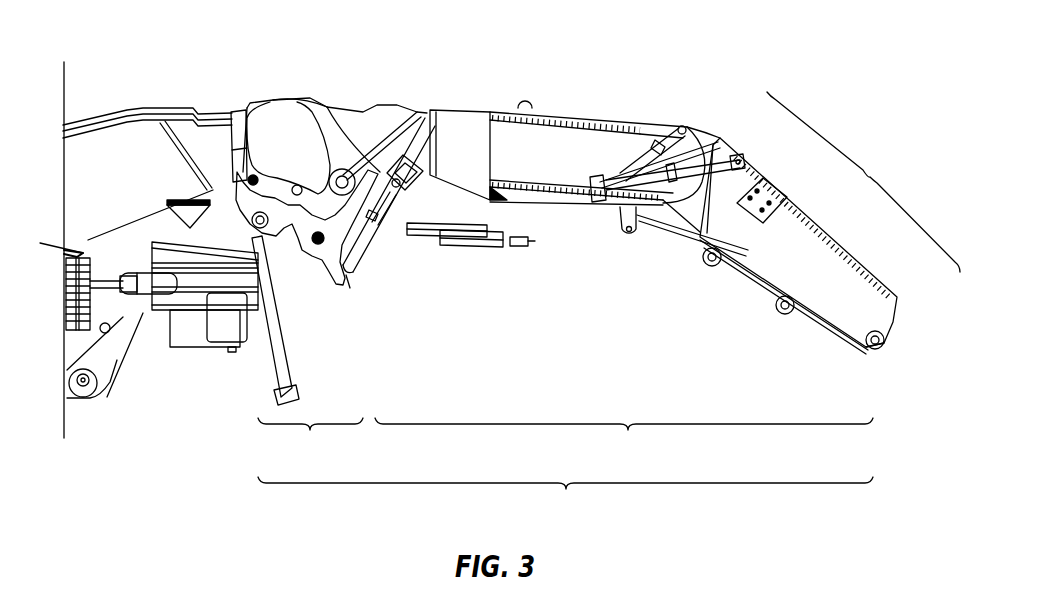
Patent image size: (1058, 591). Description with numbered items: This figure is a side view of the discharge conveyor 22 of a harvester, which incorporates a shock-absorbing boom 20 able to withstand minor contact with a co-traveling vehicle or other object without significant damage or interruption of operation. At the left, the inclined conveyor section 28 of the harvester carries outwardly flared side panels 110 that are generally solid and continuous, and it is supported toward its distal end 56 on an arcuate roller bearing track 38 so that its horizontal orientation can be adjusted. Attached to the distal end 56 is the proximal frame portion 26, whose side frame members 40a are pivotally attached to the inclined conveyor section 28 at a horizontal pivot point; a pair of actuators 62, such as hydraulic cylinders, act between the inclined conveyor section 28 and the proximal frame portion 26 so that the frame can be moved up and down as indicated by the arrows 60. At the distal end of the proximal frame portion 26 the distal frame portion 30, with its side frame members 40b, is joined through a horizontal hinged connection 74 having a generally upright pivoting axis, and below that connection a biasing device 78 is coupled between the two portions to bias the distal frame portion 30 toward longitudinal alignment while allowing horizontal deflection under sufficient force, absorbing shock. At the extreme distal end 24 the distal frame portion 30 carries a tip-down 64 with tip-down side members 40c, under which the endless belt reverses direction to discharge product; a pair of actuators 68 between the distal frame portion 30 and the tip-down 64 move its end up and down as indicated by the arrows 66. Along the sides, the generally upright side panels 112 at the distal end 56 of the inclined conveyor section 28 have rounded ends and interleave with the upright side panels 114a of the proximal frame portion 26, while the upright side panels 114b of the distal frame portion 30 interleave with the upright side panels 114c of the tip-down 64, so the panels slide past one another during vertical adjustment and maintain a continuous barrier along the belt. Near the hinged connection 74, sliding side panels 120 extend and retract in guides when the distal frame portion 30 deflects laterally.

The shock-absorbing boom 20 is at (565, 498).
The discharge conveyor 22 is at (536, 68).
The distal end 24 is at (891, 391).
The proximal frame portion 26 is at (310, 442).
The inclined conveyor section 28 is at (123, 130).
The distal frame portion 30 is at (624, 442).
The arcuate roller bearing track 38 is at (293, 387).
The side frame members of the proximal frame portion 40a is at (427, 120).
The side frame members of the distal frame portion 40b is at (597, 203).
The tip-down side members 40c is at (743, 290).
The distal end of the inclined conveyor section 56 is at (286, 66).
The arrows indicating up and down movement 60 is at (658, 252).
The actuators 62 is at (357, 260).
The tip-down 64 is at (870, 177).
The arrows indicating up and down movement of the tip-down 66 is at (917, 328).
The actuators 68 is at (653, 127).
The horizontal hinged connection 74 is at (414, 260).
The biasing device 78 is at (474, 260).
The outwardly flared side panels 110 is at (190, 130).
The upright side panels 112 is at (247, 110).
The upright side panels of the proximal frame portion 114a is at (343, 113).
The upright side panels of the distal frame portion 114b is at (570, 127).
The upright side panels of the tip-down 114c is at (807, 213).
The sliding side panels 120 is at (460, 120).